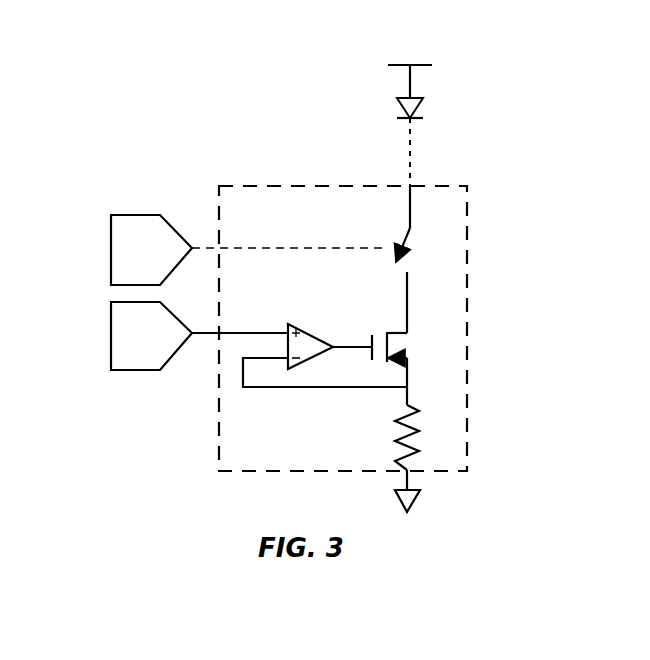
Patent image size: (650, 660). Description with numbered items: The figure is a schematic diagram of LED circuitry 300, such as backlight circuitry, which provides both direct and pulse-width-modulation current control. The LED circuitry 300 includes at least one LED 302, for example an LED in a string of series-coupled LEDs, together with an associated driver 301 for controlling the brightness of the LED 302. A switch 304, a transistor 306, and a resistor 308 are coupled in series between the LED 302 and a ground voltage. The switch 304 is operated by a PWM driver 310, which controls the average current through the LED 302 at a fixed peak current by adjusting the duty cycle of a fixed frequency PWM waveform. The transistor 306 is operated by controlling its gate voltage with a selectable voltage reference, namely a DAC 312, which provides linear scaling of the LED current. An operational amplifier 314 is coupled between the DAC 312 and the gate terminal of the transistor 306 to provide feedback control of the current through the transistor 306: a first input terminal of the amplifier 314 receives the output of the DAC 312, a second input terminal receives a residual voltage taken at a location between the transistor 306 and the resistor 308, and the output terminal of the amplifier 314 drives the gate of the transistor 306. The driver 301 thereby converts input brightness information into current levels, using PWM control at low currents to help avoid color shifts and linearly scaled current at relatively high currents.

The LED circuitry 300 is at (122, 66).
The driver 301 is at (258, 186).
The LED 302 is at (425, 80).
The switch 304 is at (420, 241).
The transistor 306 is at (418, 340).
The resistor 308 is at (430, 424).
The PWM driver 310 is at (111, 249).
The digital-to-analog converter 312 is at (111, 334).
The operational amplifier 314 is at (316, 330).